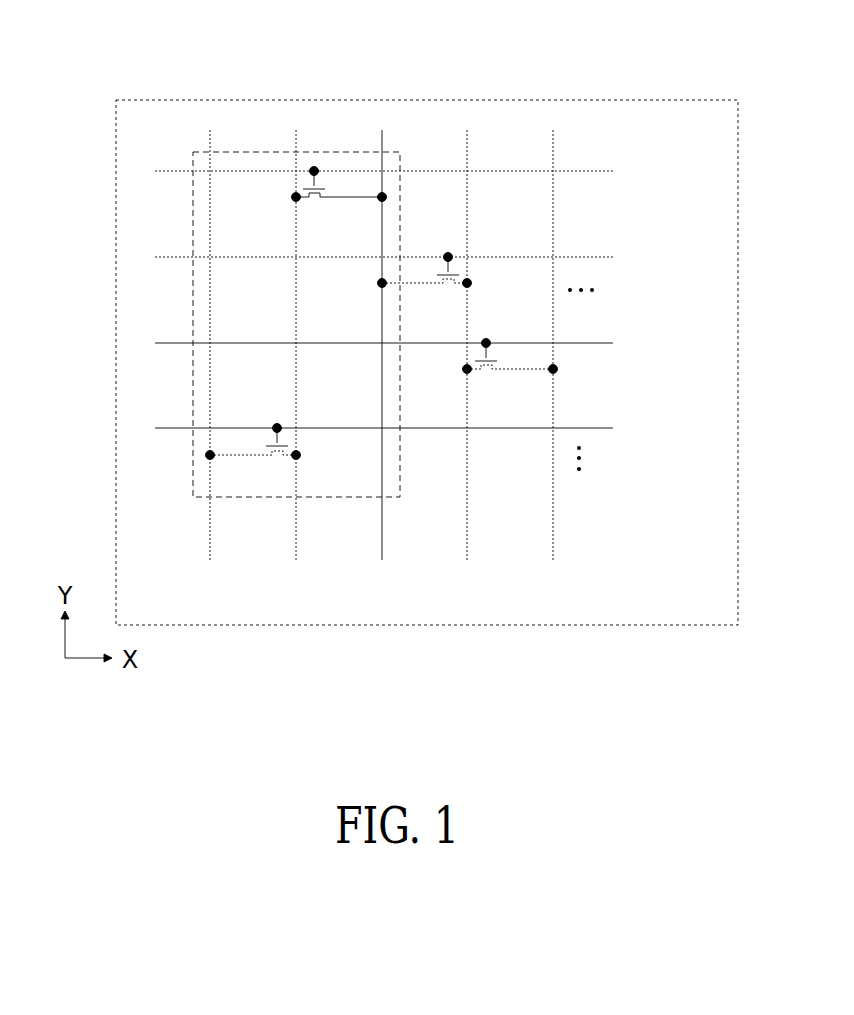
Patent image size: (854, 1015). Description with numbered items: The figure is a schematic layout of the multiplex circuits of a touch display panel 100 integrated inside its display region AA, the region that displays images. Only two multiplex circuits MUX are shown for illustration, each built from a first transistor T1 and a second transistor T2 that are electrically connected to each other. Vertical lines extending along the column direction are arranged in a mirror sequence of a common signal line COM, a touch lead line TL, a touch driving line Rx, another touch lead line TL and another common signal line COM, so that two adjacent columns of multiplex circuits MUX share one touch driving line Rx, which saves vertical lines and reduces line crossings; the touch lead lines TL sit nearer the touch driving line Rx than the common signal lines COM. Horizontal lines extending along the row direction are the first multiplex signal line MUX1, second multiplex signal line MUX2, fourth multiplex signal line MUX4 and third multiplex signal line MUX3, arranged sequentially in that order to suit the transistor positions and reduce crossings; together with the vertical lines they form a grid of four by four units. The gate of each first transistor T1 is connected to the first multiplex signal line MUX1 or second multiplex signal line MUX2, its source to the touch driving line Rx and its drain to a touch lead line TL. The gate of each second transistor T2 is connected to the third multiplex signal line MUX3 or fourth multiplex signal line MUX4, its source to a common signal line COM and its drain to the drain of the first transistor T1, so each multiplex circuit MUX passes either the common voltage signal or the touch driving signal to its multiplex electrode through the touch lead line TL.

The touch display panel 100 is at (183, 49).
The display region AA is at (628, 124).
The multiplex circuit MUX is at (350, 152).
The first multiplex signal line MUX1 is at (419, 173).
The second multiplex signal line MUX2 is at (420, 253).
The third multiplex signal line MUX3 is at (420, 429).
The fourth multiplex signal line MUX4 is at (420, 343).
The first transistor T1 is at (382, 243).
The second transistor T2 is at (382, 416).
The common signal line COM is at (388, 366).
The touch lead line TL is at (381, 366).
The touch driving line Rx is at (380, 366).